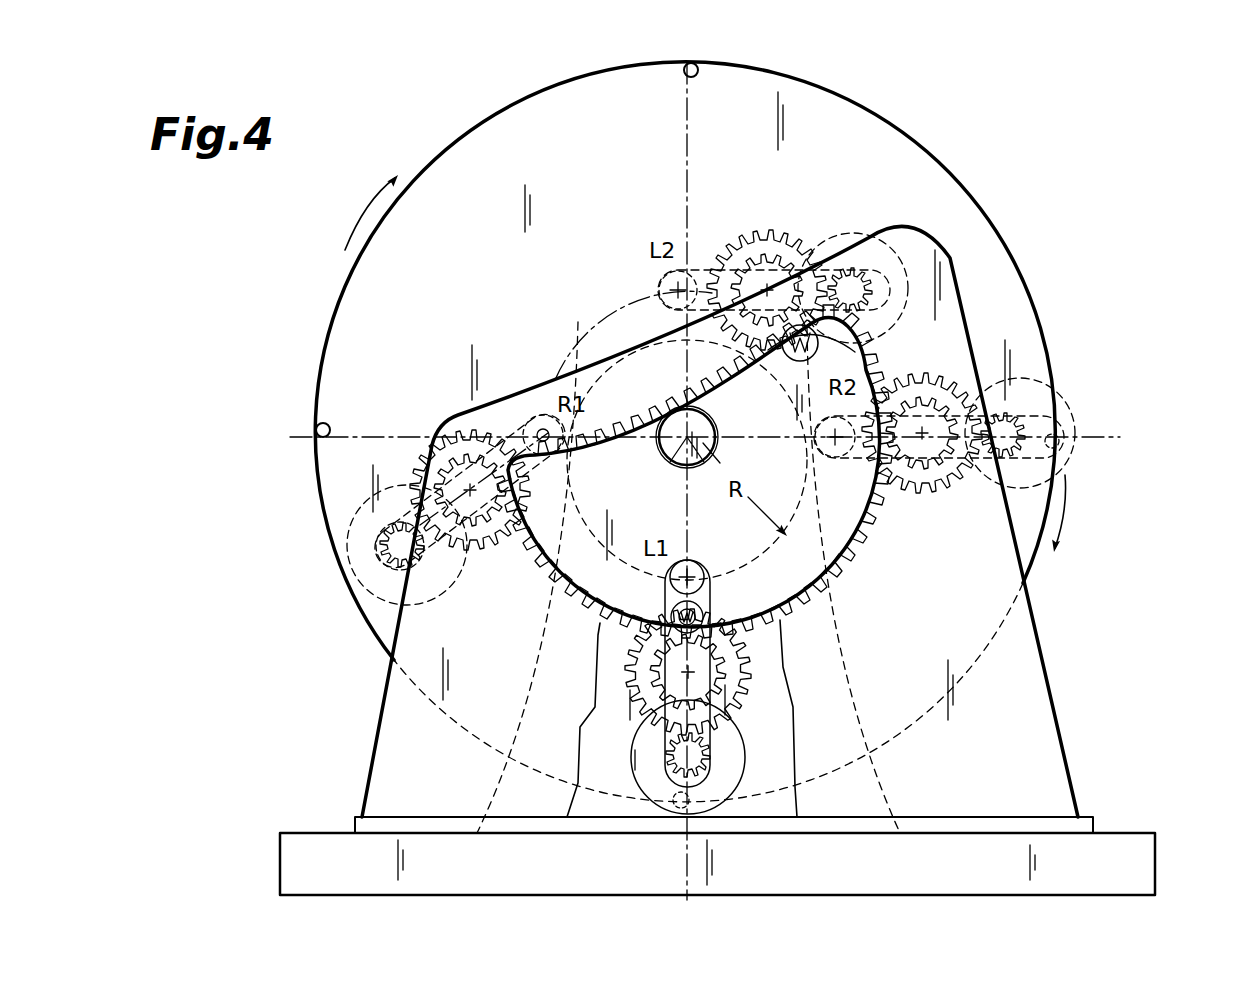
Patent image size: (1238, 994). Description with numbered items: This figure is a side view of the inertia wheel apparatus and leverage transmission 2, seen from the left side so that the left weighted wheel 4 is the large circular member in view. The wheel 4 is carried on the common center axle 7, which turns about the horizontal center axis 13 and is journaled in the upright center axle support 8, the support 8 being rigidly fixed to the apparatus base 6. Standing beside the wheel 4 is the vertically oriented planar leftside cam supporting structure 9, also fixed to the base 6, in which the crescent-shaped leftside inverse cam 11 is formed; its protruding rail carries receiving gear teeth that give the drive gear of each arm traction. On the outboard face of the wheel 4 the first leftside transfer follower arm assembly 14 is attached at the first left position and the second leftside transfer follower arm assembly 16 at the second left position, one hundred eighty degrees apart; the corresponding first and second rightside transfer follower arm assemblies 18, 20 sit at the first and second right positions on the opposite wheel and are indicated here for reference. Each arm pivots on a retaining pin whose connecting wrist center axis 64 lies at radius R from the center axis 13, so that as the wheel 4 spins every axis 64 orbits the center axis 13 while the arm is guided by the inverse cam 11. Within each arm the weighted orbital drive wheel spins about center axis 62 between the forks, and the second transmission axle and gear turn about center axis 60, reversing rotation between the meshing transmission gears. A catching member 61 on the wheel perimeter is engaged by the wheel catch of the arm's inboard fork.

The inertia wheel apparatus and leverage transmission 2 is at (1160, 145).
The left weighted wheel 4 is at (822, 112).
The apparatus base 6 is at (1150, 868).
The common center axle 7 is at (665, 448).
The center axle support 8 is at (487, 792).
The leftside cam supporting structure 9 is at (1023, 673).
The leftside inverse cam 11 is at (843, 557).
The center axis 13 is at (681, 463).
The first leftside transfer follower arm assembly 14 is at (760, 708).
The second leftside transfer follower arm assembly 16 is at (833, 215).
The first rightside transfer follower arm assembly 18 is at (1033, 370).
The second rightside transfer follower arm assembly 20 is at (350, 485).
The center axis of second transmission axle 60 is at (765, 285).
The catching member 61 is at (695, 80).
The center axis of orbital drive wheel 62 is at (850, 285).
The connecting wrist center axis 64 is at (672, 287).